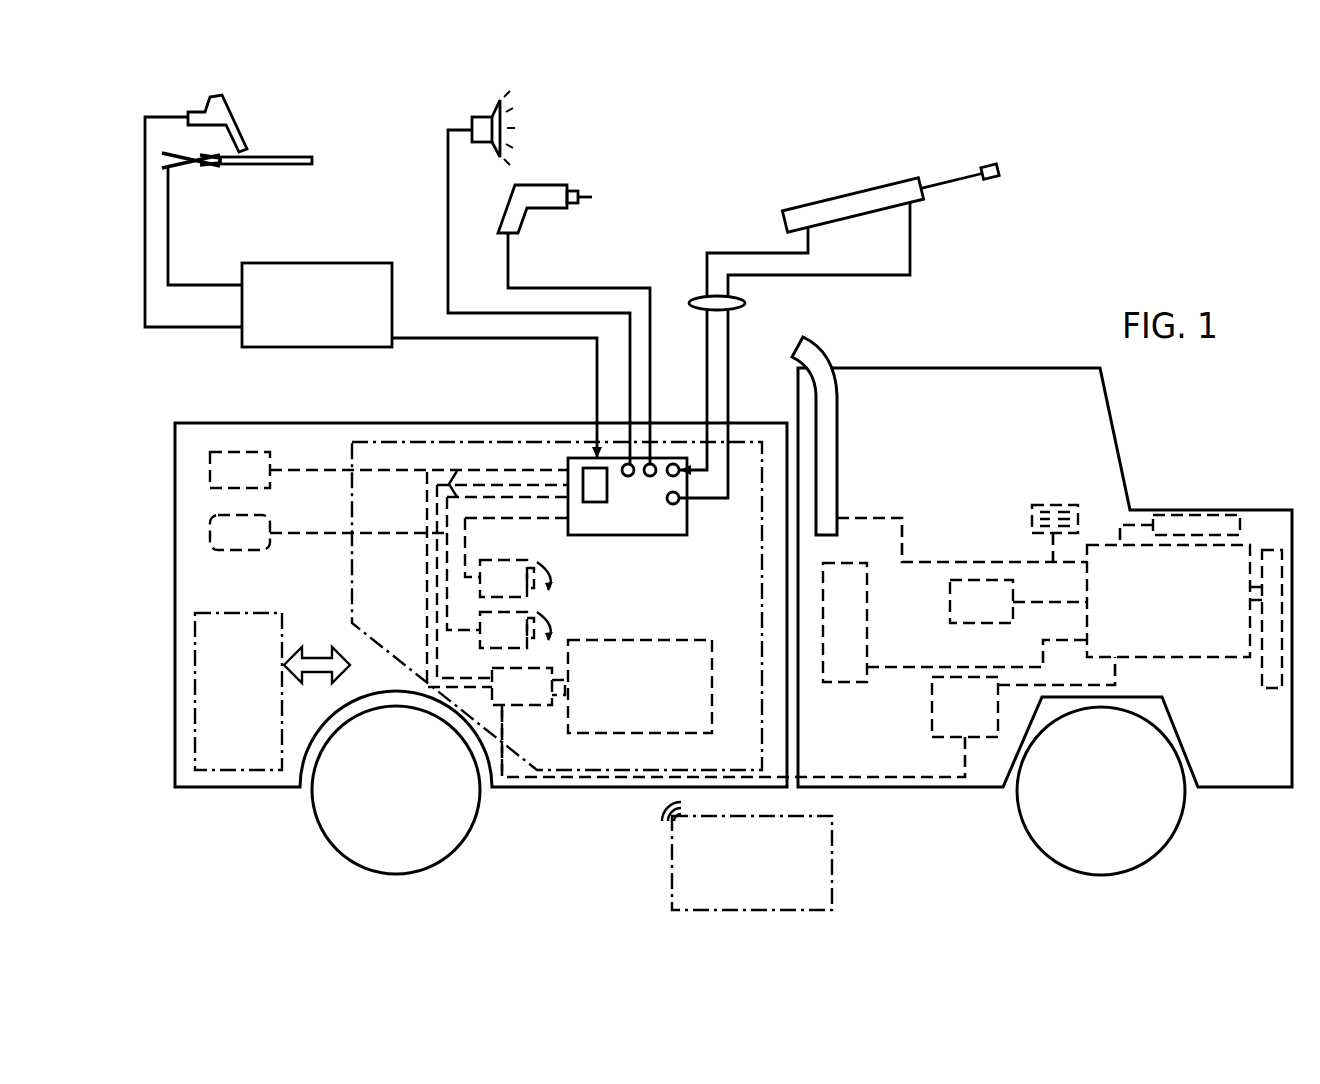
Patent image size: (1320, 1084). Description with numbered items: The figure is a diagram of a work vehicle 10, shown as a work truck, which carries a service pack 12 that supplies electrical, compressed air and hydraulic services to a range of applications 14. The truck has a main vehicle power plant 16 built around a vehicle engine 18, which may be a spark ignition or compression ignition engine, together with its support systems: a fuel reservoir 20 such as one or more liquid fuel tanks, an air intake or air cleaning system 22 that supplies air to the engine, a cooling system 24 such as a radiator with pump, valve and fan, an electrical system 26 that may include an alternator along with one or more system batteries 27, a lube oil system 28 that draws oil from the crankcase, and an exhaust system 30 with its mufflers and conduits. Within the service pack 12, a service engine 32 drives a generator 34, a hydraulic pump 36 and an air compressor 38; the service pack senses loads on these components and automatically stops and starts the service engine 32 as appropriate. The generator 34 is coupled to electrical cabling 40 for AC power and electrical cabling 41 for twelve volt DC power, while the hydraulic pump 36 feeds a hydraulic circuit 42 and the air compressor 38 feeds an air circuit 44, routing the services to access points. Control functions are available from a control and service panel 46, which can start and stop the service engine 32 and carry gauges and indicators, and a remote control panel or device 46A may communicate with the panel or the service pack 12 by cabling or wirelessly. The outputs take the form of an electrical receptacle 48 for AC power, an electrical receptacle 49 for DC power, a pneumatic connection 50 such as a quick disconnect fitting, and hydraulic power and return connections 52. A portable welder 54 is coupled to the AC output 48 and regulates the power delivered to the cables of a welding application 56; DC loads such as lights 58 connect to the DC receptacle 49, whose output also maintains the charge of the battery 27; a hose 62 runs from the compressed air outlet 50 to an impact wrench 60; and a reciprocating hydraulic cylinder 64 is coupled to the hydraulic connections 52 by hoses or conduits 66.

The work vehicle 10 is at (722, 621).
The service pack 12 is at (352, 595).
The applications 14 is at (595, 294).
The main vehicle power plant 16 is at (1140, 447).
The vehicle engine 18 is at (1165, 657).
The fuel reservoir 20 is at (847, 682).
The air intake or air cleaning system 22 is at (1172, 517).
The cooling system 24 is at (1273, 690).
The electrical system 26 is at (1032, 520).
The system batteries 27 is at (947, 737).
The lube oil system 28 is at (950, 593).
The exhaust system 30 is at (837, 458).
The service engine 32 is at (620, 640).
The generator 34 is at (523, 705).
The hydraulic pump 36 is at (502, 652).
The air compressor 38 is at (498, 560).
The electrical cabling 40 is at (428, 620).
The electrical cabling 41 is at (437, 660).
The hydraulic circuit 42 is at (447, 575).
The air circuit 44 is at (465, 528).
The control and service panel 46 is at (240, 612).
The remote control panel or device 46A is at (832, 860).
The electrical receptacle 48 is at (619, 469).
The electrical receptacle 49 is at (628, 464).
The pneumatic connection 50 is at (650, 464).
The hydraulic power and return connections 52 is at (679, 503).
The portable welder 54 is at (327, 263).
The welding application 56 is at (288, 150).
The lights 58 is at (478, 115).
The impact wrench 60 is at (574, 307).
The hose 62 is at (580, 288).
The reciprocating hydraulic cylinder 64 is at (829, 319).
The hoses or conduits 66 is at (693, 302).